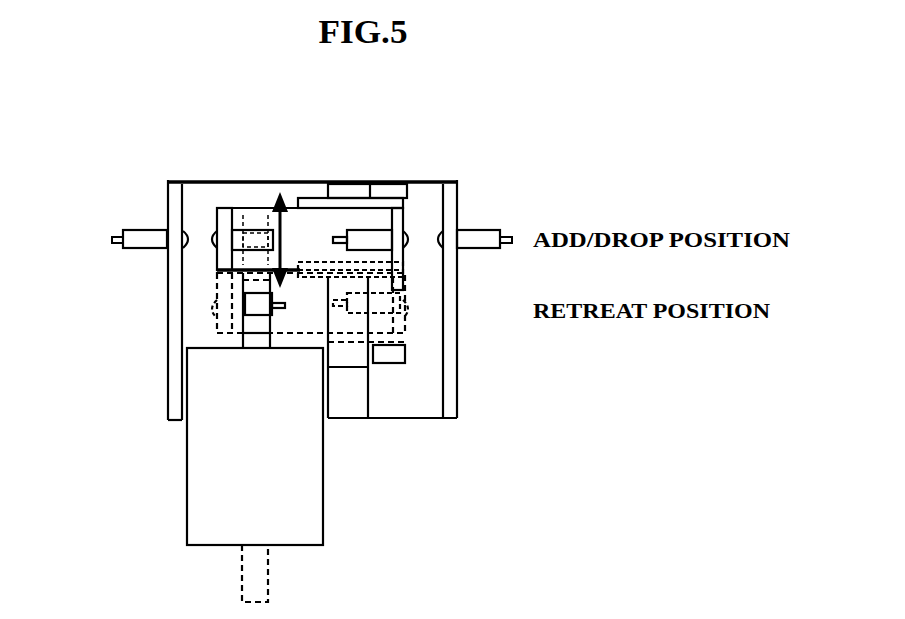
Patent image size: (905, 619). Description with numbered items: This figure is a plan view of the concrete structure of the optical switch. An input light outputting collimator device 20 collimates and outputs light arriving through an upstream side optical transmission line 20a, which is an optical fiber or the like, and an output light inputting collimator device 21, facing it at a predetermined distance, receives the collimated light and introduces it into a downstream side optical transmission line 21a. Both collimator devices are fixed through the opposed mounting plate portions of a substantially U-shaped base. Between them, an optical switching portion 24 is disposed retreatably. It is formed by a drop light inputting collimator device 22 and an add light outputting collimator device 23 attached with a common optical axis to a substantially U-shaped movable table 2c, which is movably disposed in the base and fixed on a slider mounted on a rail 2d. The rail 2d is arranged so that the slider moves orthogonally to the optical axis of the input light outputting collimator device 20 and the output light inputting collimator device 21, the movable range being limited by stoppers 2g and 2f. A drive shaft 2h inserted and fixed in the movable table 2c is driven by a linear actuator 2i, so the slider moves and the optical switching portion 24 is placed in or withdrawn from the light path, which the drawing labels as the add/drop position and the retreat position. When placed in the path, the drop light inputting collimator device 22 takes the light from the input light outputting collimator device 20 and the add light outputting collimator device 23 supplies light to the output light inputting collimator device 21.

The input light outputting collimator device 20 is at (141, 230).
The upstream side optical transmission line 20a is at (112, 241).
The output light inputting collimator device 21 is at (478, 228).
The downstream side optical transmission line 21a is at (510, 238).
The drop light inputting collimator device 22 is at (236, 208).
The add light outputting collimator device 23 is at (358, 225).
The optical switching portion 24 is at (216, 200).
The movable table 2c is at (297, 218).
The rail 2d is at (357, 357).
The stopper 2f is at (405, 367).
The stopper 2g is at (387, 195).
The drive shaft 2h is at (272, 565).
The linear actuator 2i is at (324, 487).